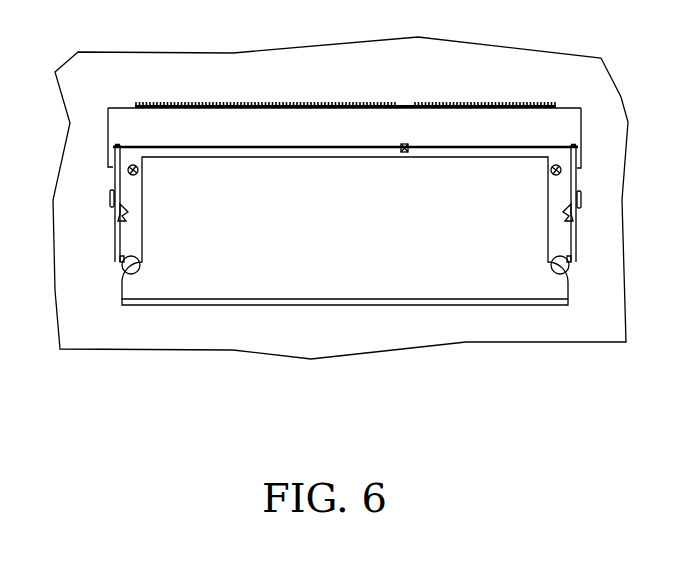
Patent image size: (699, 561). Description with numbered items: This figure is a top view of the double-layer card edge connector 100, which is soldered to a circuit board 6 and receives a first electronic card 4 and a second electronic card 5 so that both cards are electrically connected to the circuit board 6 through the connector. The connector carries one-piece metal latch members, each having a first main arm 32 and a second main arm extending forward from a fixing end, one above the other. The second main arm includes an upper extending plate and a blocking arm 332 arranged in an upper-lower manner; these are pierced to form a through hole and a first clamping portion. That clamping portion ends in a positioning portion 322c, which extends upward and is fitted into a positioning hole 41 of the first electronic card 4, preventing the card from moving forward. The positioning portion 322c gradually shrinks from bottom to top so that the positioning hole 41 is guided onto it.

The circuit board 6 is at (521, 49).
The double-layer card edge connector 100 is at (579, 119).
The positioning hole 41 is at (132, 165).
The positioning portion 322c is at (127, 170).
The first main arm 32 is at (117, 218).
The blocking arm 332 is at (117, 265).
The first electronic card 4 is at (248, 299).
The second electronic card 5 is at (281, 305).